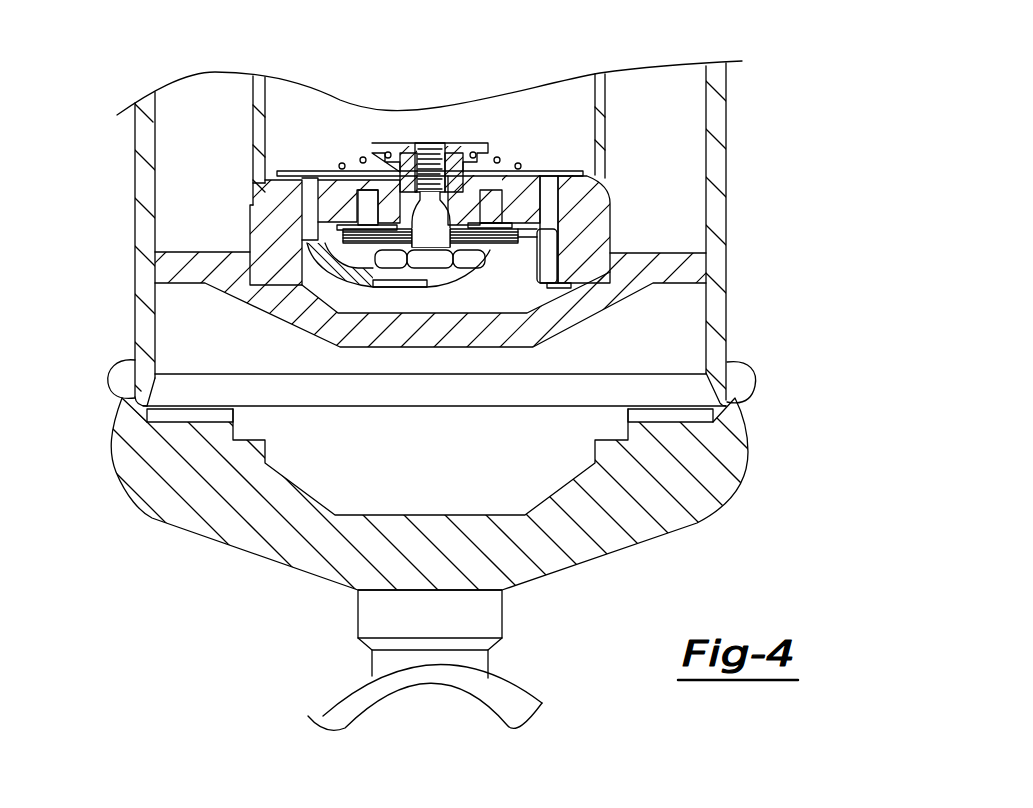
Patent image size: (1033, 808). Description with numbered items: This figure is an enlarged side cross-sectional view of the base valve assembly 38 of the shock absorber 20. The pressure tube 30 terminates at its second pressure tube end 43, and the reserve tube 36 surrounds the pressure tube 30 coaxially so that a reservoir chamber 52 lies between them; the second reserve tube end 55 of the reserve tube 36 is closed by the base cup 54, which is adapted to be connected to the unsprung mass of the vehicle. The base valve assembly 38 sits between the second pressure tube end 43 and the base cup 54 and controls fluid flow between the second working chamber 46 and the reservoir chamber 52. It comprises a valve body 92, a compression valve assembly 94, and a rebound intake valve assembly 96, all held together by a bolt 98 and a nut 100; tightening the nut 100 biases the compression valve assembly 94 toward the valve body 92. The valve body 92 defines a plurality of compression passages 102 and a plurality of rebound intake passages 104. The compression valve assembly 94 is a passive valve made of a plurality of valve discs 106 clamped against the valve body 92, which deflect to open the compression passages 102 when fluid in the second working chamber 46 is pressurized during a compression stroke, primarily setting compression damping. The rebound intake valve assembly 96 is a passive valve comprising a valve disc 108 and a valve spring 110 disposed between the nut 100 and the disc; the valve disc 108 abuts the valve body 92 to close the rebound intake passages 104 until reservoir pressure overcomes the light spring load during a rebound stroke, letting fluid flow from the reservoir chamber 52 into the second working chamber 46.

The shock absorber 20 is at (785, 120).
The pressure tube 30 is at (257, 87).
The reserve tube 36 is at (138, 197).
The base valve assembly 38 is at (630, 228).
The second pressure tube end 43 is at (257, 192).
The second working chamber 46 is at (300, 110).
The reservoir chamber 52 is at (665, 74).
The base cup 54 is at (583, 553).
The second reserve tube end 55 is at (145, 378).
The valve body 92 is at (273, 258).
The compression valve assembly 94 is at (472, 289).
The rebound intake valve assembly 96 is at (467, 128).
The bolt 98 is at (428, 155).
The nut 100 is at (403, 150).
The compression passages 102 is at (367, 208).
The rebound intake passages 104 is at (560, 203).
The valve discs 106 is at (497, 237).
The valve disc 108 is at (560, 170).
The valve spring 110 is at (498, 155).